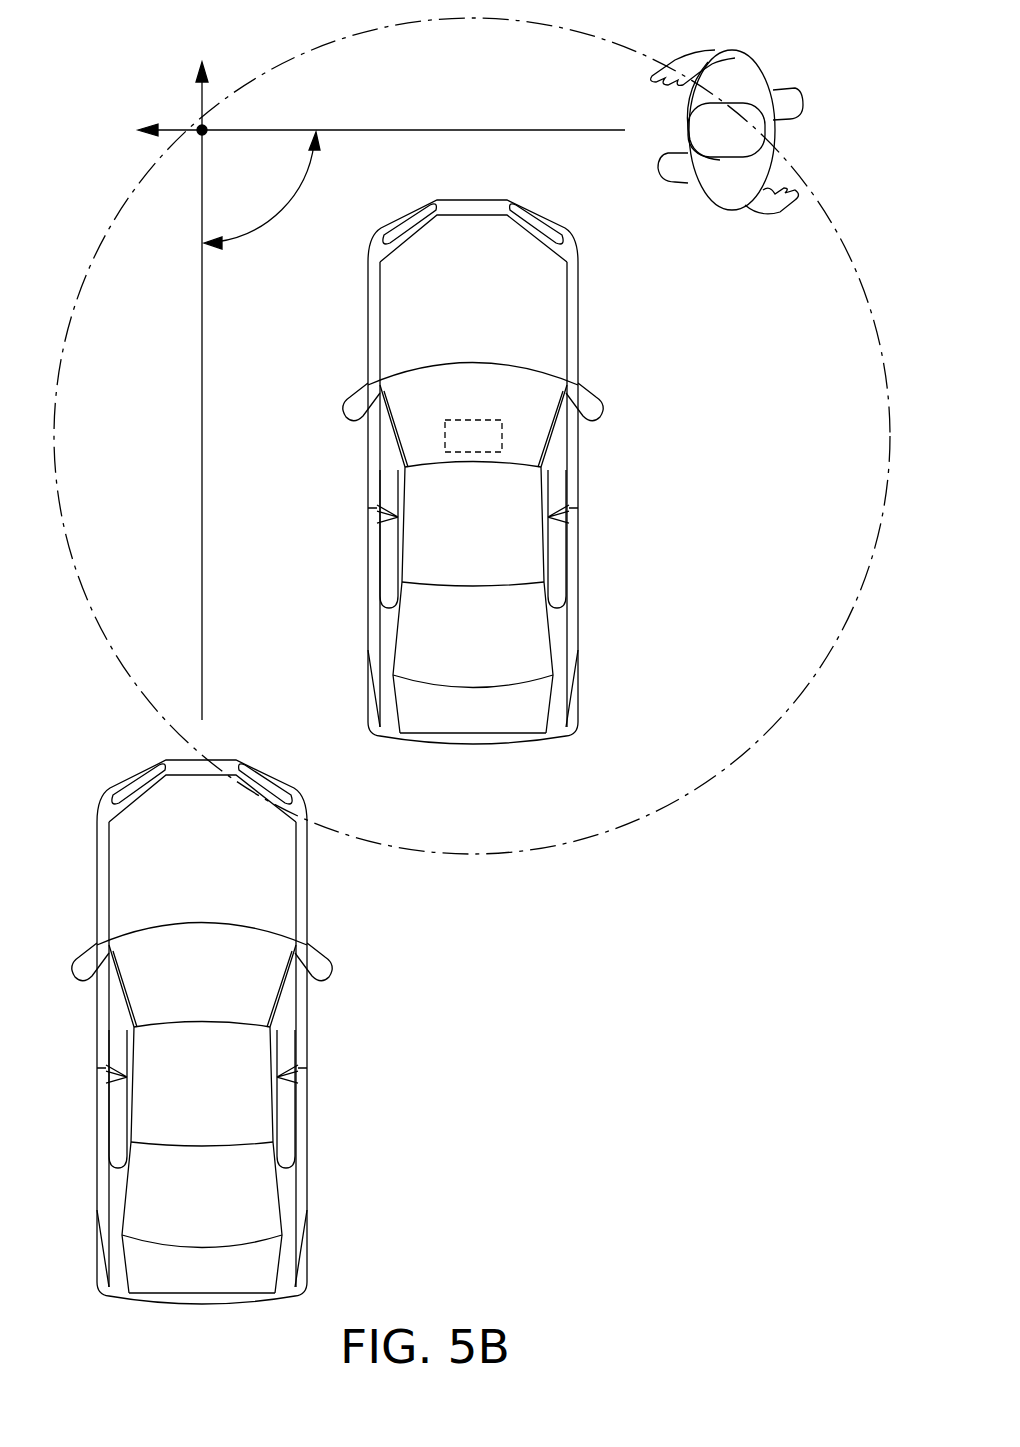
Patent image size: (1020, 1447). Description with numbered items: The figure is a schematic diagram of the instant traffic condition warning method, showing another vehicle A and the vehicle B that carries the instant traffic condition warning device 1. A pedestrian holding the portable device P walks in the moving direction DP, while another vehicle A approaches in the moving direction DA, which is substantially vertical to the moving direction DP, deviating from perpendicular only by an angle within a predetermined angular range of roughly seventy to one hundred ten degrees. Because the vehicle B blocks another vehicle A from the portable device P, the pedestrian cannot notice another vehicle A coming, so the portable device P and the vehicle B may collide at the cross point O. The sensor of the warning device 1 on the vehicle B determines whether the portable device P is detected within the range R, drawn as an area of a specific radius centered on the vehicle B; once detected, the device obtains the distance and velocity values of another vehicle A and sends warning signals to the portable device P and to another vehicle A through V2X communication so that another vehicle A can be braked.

The another vehicle A is at (133, 875).
The vehicle B is at (405, 316).
The instant traffic condition warning device 1 is at (455, 434).
The portable device P is at (745, 72).
The range R is at (696, 790).
The cross point O is at (202, 130).
The moving direction DP is at (284, 130).
The moving direction DA is at (202, 221).